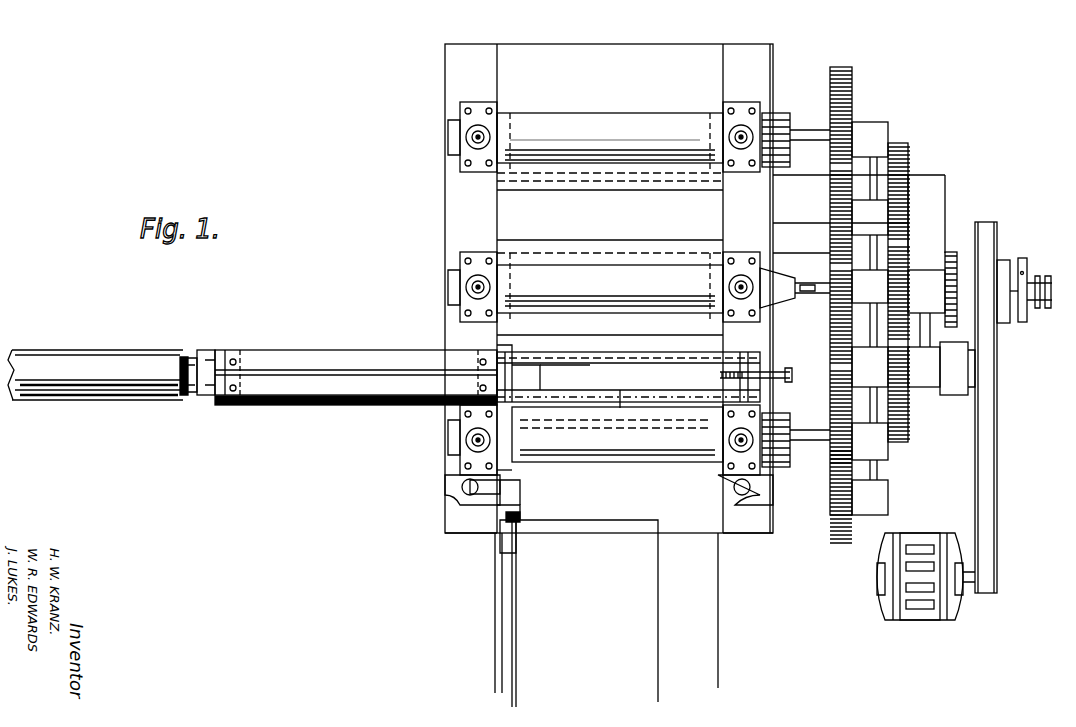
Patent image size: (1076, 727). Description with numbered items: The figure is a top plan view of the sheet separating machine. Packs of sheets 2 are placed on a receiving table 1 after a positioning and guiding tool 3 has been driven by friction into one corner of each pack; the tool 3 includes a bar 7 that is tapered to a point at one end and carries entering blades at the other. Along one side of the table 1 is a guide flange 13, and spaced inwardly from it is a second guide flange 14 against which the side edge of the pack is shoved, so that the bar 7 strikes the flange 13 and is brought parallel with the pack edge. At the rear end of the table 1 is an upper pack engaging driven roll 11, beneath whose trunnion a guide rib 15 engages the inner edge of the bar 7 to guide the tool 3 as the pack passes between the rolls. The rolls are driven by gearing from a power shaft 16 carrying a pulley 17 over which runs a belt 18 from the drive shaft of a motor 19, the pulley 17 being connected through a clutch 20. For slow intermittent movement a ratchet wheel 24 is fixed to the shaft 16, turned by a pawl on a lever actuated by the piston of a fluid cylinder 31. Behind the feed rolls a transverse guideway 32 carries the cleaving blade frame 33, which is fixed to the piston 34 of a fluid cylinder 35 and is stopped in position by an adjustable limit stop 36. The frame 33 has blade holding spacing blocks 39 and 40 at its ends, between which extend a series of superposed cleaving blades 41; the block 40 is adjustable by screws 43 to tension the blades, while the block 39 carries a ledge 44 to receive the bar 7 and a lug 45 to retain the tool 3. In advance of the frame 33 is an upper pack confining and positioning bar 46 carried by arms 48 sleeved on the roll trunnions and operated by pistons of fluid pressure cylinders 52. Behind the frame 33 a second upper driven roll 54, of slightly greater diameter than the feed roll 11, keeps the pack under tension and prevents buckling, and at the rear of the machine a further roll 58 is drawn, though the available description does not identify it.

The receiving table 1 is at (705, 647).
The packs of sheets 2 is at (640, 612).
The positioning and guiding tool 3 is at (520, 516).
The bar 7 is at (512, 500).
The upper pack engaging driven roll 11 is at (575, 455).
The guide flange 13 is at (500, 542).
The second guide flange 14 is at (510, 623).
The guide rib 15 is at (512, 470).
The power shaft 16 is at (1052, 300).
The pulley 17 is at (1000, 335).
The belt 18 is at (999, 415).
The motor 19 is at (950, 612).
The clutch 20 is at (1020, 258).
The ratchet wheel 24 is at (950, 250).
The fluid cylinder 31 is at (955, 395).
The transverse guideway 32 is at (600, 358).
The cleaving blade frame 33 is at (305, 350).
The piston 34 is at (190, 397).
The fluid cylinder 35 is at (145, 388).
The adjustable limit stop 36 is at (716, 374).
The blade holding spacing block 39 is at (517, 362).
The blade holding spacing block 40 is at (210, 355).
The cleaving blades 41 is at (305, 407).
The screws 43 is at (190, 365).
The ledge 44 is at (590, 365).
The lug 45 is at (528, 368).
The upper pack confining and positioning bar 46 is at (618, 410).
The arms 48 is at (520, 488).
The fluid pressure cylinders 52 is at (478, 495).
The upper driven roll 54 is at (660, 298).
The upper roller 58 is at (603, 112).